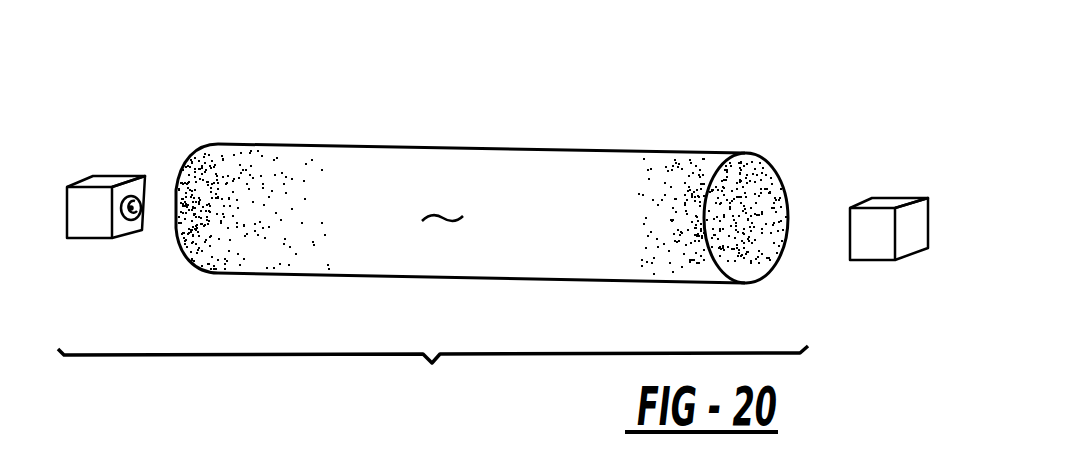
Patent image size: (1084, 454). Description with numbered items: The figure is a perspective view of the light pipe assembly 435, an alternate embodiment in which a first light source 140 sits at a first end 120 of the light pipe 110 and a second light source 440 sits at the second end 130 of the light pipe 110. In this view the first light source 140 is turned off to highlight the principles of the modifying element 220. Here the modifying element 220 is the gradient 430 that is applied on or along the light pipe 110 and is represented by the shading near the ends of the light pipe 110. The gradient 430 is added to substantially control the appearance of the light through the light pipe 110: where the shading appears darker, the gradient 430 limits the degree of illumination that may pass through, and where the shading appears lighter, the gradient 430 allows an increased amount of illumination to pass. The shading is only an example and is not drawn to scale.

The light pipe 110 is at (349, 148).
The first end 120 is at (158, 254).
The second end 130 is at (784, 245).
The first light source 140 is at (83, 245).
The modifying element 220 is at (217, 170).
The gradient 430 is at (442, 201).
The light pipe assembly 435 is at (433, 375).
The second light source 440 is at (885, 263).